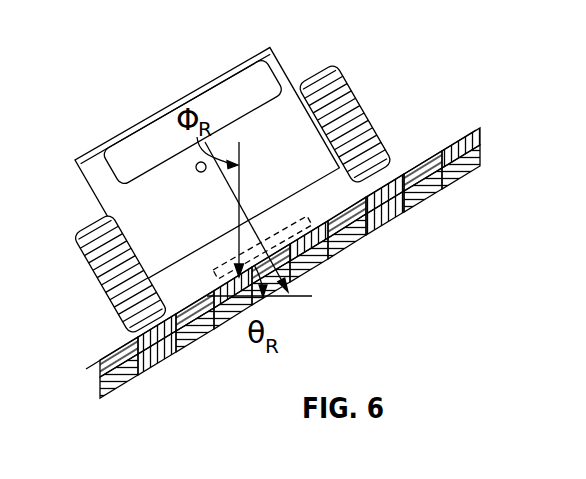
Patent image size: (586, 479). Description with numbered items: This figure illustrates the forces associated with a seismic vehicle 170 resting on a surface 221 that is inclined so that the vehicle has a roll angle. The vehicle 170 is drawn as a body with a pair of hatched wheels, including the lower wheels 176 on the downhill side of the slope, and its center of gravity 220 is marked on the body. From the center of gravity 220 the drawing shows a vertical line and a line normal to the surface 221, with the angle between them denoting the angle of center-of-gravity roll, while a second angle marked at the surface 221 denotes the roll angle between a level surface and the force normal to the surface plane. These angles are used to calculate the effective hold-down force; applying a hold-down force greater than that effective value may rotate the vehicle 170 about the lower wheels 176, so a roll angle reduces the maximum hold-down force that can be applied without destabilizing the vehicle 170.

The vehicle 170 is at (264, 53).
The lower wheels 176 is at (90, 277).
The center of gravity 220 is at (200, 173).
The surface 221 is at (465, 136).